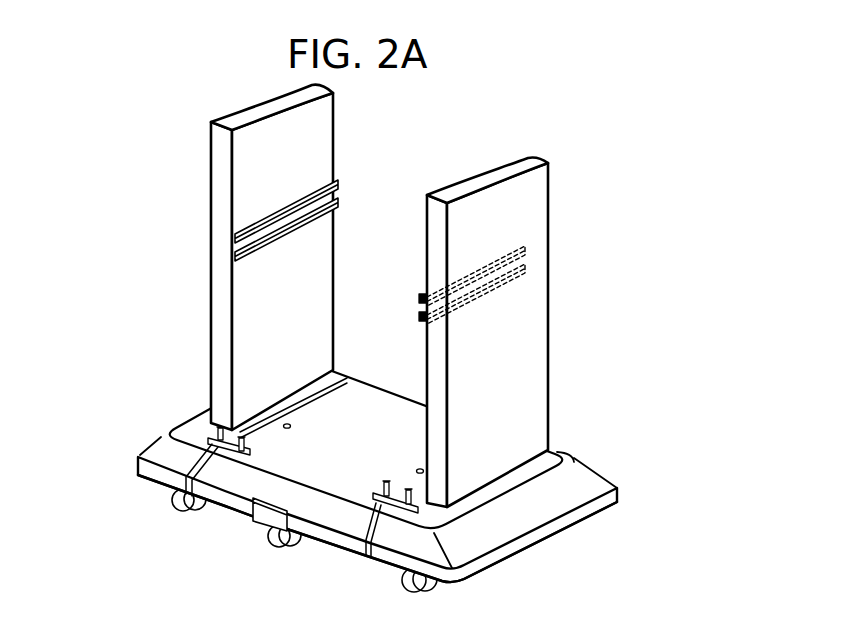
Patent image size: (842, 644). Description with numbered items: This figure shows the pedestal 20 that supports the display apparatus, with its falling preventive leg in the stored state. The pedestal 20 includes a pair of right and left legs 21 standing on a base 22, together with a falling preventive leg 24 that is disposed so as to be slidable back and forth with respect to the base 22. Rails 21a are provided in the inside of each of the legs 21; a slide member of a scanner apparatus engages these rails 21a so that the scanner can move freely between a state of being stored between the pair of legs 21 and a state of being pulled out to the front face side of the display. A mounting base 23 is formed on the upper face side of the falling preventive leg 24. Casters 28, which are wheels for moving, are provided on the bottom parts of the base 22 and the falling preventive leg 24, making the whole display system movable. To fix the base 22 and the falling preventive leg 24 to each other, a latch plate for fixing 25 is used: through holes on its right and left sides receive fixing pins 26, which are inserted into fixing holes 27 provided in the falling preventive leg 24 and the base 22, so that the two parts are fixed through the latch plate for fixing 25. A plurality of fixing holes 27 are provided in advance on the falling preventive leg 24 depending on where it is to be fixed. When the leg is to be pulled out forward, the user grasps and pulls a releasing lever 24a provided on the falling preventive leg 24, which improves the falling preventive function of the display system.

The pedestal 20 is at (178, 239).
The leg 21 is at (211, 316).
The rail 21a is at (420, 298).
The base 22 is at (147, 457).
The mounting base 23 is at (277, 445).
The falling preventive leg 24 is at (235, 506).
The releasing lever 24a is at (263, 516).
The latch plate for fixing 25 is at (216, 436).
The fixing pin 26 is at (212, 448).
The fixing hole 27 is at (287, 423).
The caster 28 is at (172, 505).